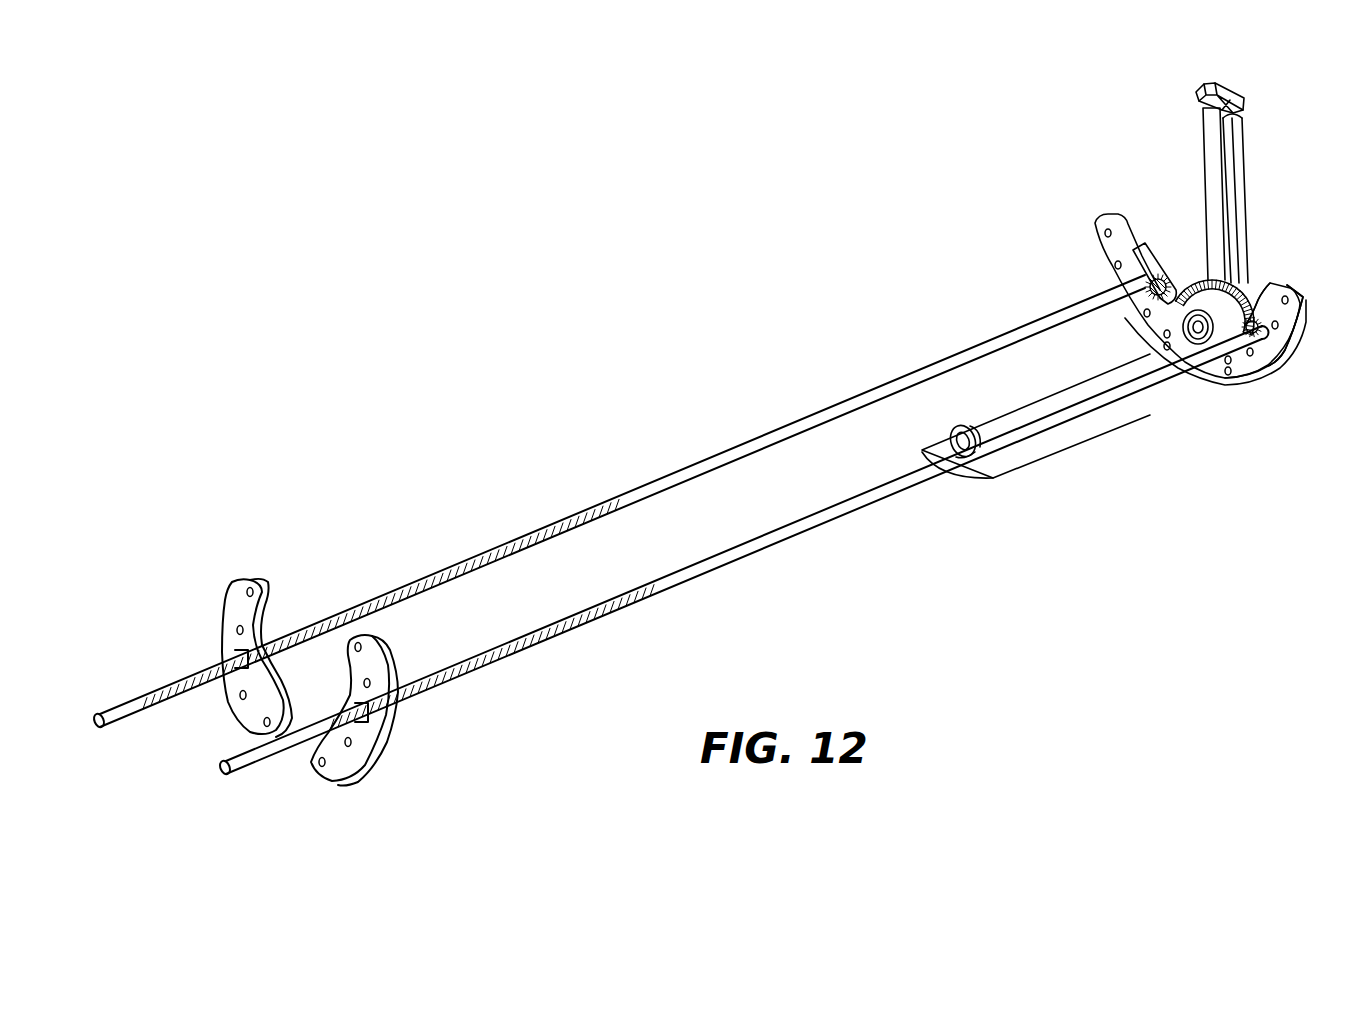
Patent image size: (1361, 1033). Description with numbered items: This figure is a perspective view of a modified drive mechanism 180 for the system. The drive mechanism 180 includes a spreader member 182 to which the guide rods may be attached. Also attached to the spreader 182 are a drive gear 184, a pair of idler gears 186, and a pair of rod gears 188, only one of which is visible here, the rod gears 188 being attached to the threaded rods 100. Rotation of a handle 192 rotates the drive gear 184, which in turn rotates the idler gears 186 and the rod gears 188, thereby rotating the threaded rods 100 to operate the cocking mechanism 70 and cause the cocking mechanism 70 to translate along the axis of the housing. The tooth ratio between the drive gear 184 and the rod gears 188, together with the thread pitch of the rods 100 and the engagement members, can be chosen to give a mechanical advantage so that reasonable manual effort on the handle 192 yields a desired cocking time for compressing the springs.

The cocking mechanism 70 is at (404, 659).
The threaded rod 100 is at (503, 647).
The drive mechanism 180 is at (1132, 182).
The spreader member 182 is at (1283, 343).
The drive gear 184 is at (1250, 277).
The idler gear 186 is at (1160, 280).
The rod gear 188 is at (1087, 263).
The handle 192 is at (1241, 160).